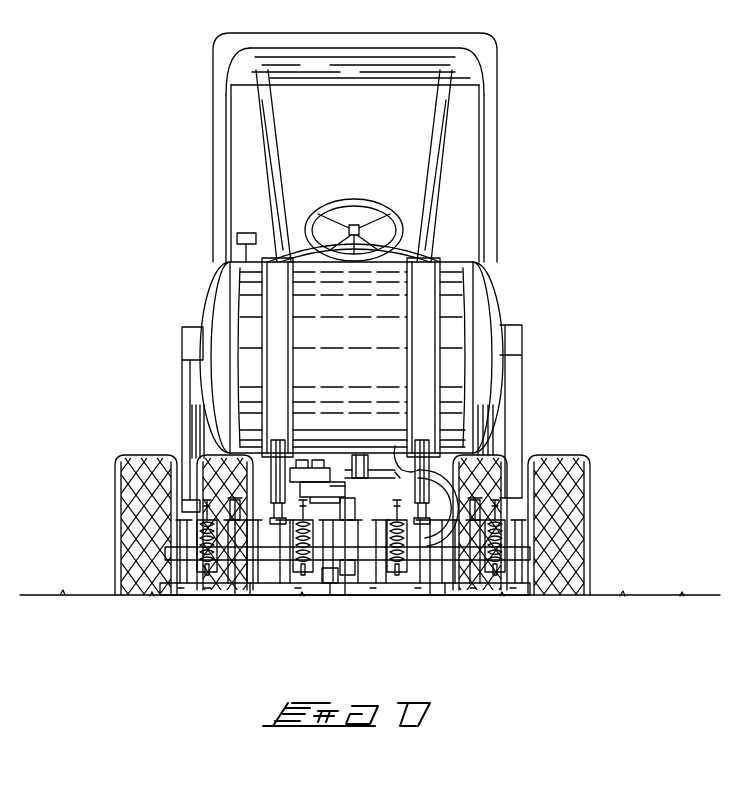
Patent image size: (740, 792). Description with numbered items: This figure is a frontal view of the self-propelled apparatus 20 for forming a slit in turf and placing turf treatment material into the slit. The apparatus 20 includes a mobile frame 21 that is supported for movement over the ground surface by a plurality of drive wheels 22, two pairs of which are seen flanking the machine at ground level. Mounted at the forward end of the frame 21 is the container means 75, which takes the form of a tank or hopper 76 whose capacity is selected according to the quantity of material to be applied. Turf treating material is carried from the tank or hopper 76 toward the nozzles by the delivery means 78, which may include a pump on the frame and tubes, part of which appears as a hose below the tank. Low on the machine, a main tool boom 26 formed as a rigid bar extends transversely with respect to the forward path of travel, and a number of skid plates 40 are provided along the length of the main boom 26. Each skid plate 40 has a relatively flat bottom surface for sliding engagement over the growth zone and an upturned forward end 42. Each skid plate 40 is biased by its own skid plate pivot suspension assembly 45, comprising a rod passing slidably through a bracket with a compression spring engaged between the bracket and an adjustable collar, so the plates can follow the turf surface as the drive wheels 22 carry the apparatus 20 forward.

The apparatus 20 is at (507, 214).
The mobile frame 21 is at (397, 446).
The drive wheels 22 is at (128, 497).
The main tool boom 26 is at (430, 580).
The skid plates 40 is at (269, 598).
The upturned forward end 42 is at (331, 590).
The skid plate pivot suspension assembly 45 is at (197, 545).
The container means 75 is at (500, 306).
The tank or hopper 76 is at (352, 374).
The delivery means 78 is at (462, 492).